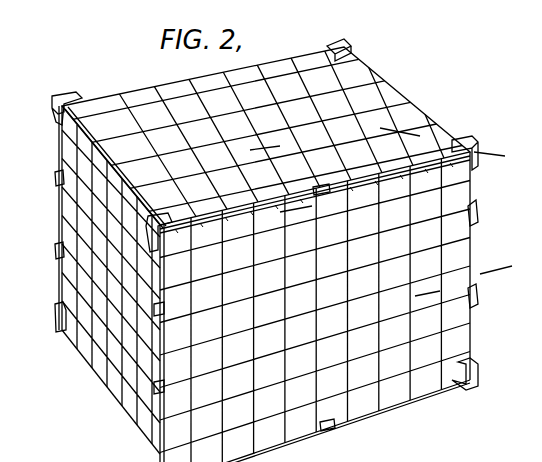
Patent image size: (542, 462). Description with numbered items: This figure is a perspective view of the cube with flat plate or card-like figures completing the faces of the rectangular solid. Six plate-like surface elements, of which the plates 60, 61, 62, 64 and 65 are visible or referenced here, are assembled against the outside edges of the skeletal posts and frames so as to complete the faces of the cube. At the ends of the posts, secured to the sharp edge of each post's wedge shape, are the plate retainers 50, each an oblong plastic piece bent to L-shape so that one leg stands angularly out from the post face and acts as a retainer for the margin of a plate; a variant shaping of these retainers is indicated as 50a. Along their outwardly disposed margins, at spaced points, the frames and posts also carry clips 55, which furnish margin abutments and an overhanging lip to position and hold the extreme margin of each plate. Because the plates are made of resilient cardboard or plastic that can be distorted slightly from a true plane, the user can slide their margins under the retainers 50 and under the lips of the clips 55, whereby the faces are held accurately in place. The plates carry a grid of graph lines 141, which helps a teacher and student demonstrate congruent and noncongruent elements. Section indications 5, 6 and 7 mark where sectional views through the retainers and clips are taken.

The plate retainer 50 is at (351, 52).
The retainer shape 50a is at (58, 180).
The clip 55 is at (320, 197).
The plate-like surface element 60 is at (405, 378).
The plate-like surface element 61 is at (86, 287).
The plate-like surface element 62 is at (268, 134).
The plate-like surface element 64 is at (374, 428).
The plate-like surface element 65 is at (108, 142).
The grid of graph lines 141 is at (348, 137).
The section line 5- 5 is at (394, 140).
The section line 6- 6 is at (510, 262).
The section line 7- 7 is at (264, 155).